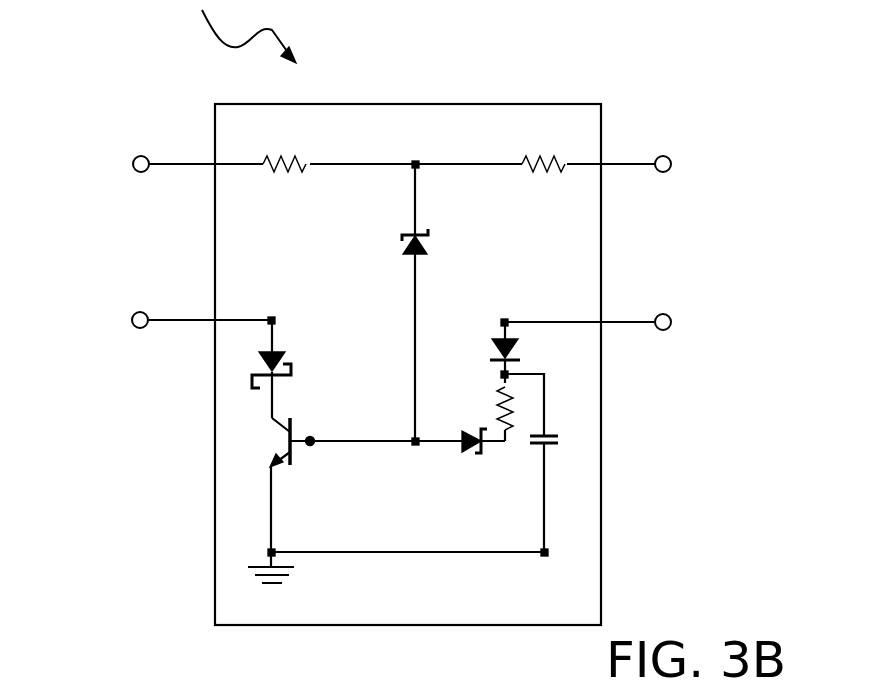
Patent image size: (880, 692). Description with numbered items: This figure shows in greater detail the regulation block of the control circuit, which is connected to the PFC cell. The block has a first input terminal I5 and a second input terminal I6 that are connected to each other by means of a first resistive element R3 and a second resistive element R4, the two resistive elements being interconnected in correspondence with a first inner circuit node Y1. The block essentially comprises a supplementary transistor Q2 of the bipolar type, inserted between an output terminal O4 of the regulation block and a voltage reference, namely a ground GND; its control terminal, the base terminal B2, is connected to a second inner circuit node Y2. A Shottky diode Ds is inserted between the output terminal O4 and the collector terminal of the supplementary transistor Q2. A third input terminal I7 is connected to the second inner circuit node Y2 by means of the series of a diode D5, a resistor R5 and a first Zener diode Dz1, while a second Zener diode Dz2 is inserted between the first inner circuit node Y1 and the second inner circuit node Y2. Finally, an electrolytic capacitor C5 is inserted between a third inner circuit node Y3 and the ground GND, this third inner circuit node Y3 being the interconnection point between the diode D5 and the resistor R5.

The second input terminal I6 is at (133, 164).
The first input terminal I5 is at (672, 164).
The third input terminal I7 is at (672, 322).
The output terminal O4 is at (132, 320).
The first inner circuit node Y1 is at (430, 164).
The second inner circuit node Y2 is at (405, 441).
The third inner circuit node Y3 is at (510, 374).
The base terminal B2 is at (313, 440).
The second resistive element R4 is at (284, 150).
The first resistive element R3 is at (543, 150).
The resistor R5 is at (489, 407).
The second Zener diode Dz2 is at (390, 243).
The first Zener diode Dz1 is at (460, 458).
The Shottky diode Ds is at (288, 369).
The diode D5 is at (488, 348).
The supplementary transistor Q2 is at (326, 485).
The electrolytic capacitor C5 is at (549, 463).
The ground GND is at (308, 585).